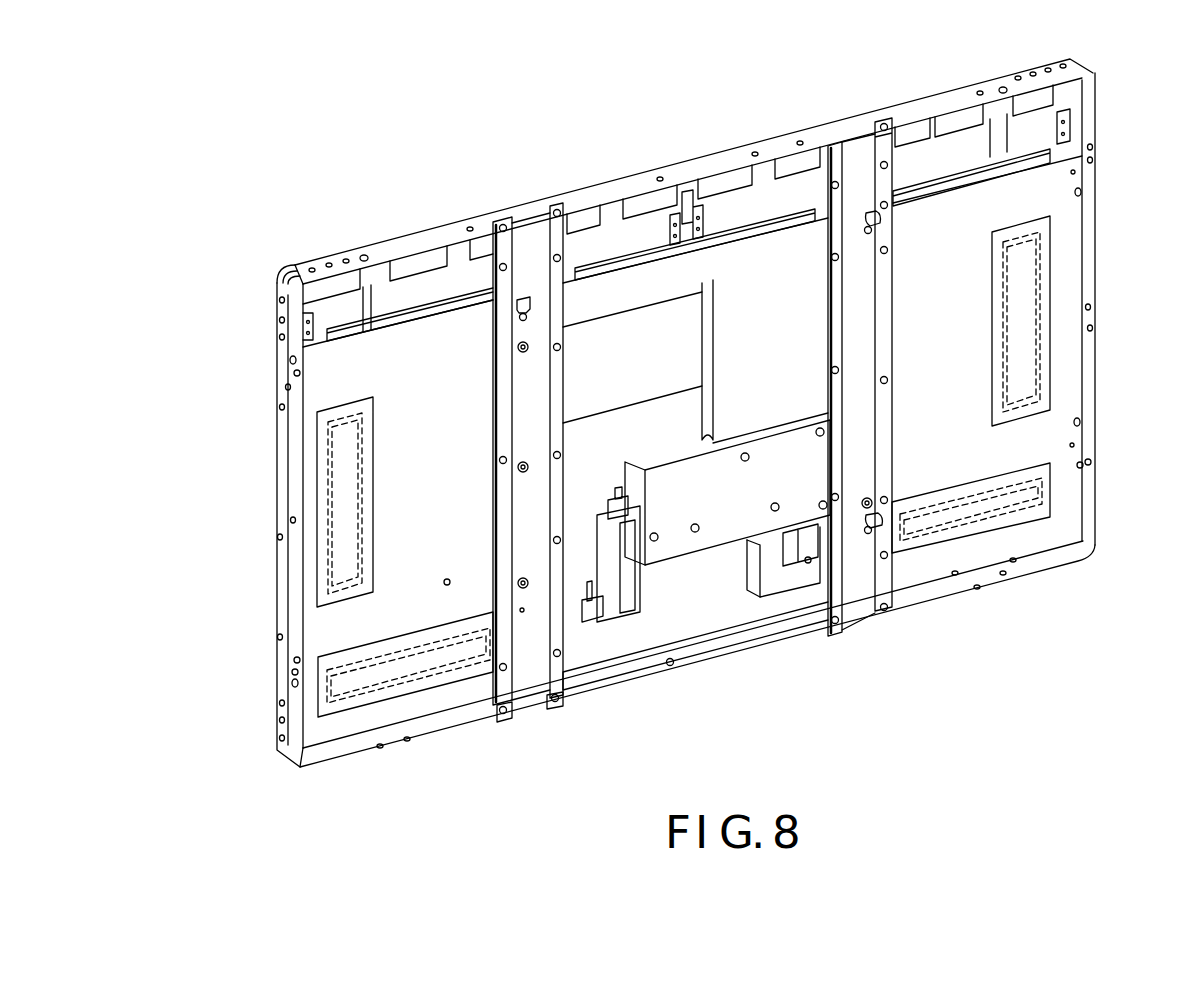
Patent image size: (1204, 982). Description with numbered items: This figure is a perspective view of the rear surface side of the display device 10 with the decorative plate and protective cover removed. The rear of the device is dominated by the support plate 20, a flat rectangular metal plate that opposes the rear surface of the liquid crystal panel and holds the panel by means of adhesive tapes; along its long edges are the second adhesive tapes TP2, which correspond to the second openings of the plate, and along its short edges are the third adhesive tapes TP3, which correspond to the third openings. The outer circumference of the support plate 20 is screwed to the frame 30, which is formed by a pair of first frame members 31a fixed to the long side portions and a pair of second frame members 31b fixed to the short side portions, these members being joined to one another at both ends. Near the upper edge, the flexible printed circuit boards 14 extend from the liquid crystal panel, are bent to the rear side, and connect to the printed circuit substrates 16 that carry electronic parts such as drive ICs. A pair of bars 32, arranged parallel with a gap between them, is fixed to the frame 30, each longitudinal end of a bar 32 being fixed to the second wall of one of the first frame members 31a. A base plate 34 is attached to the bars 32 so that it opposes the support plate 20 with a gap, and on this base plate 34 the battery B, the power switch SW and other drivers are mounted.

The display device 10 is at (782, 98).
The flexible printed circuit boards 14 is at (407, 280).
The printed circuit substrates 16 is at (450, 290).
The support plate 20 is at (1050, 425).
The frame 30 is at (456, 214).
The first frame members 31a is at (916, 118).
The second frame members 31b is at (294, 470).
The bars 32 is at (530, 683).
The base plate 34 is at (702, 620).
The battery B is at (810, 472).
The power switch SW is at (783, 578).
The second adhesive tapes TP2 is at (410, 330).
The third adhesive tapes TP3 is at (370, 527).